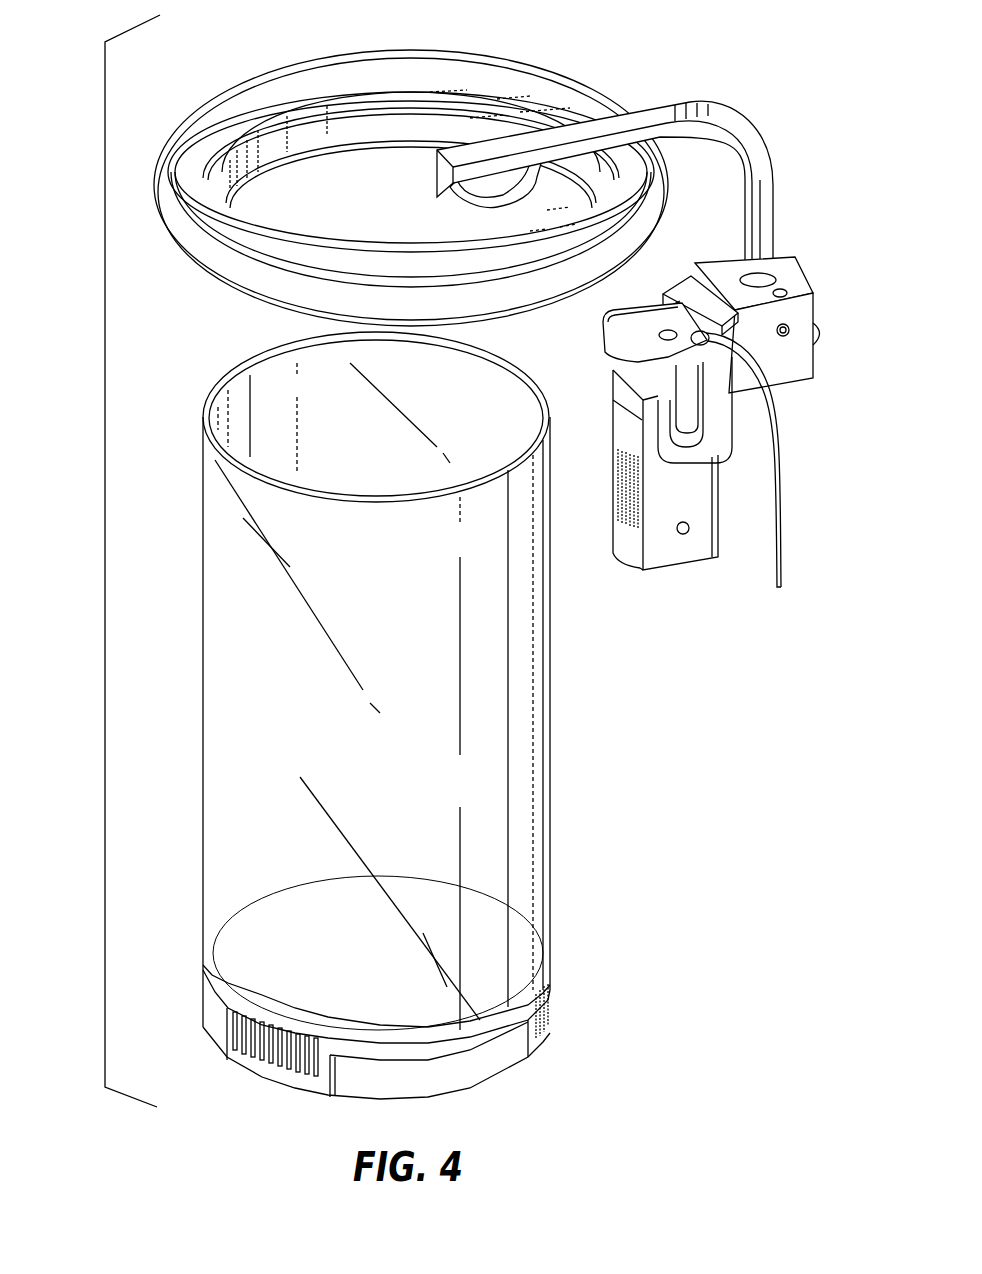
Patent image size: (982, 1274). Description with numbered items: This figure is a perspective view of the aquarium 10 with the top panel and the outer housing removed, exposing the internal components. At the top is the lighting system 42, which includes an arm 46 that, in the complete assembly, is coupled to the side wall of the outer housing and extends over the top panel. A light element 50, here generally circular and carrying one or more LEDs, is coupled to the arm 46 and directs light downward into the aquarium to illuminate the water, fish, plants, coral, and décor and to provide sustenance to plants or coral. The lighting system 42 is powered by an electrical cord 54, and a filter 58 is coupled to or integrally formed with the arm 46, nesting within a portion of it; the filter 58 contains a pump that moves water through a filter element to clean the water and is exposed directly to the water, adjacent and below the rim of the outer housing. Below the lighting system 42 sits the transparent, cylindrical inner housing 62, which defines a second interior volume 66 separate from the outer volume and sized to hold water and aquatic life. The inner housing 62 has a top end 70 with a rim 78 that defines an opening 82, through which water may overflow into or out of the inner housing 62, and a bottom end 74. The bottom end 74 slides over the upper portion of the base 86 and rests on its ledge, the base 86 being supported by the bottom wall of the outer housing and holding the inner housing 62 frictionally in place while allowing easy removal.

The aquarium 10 is at (73, 136).
The lighting system 42 is at (411, 164).
The arm 46 is at (713, 110).
The light element 50 is at (297, 90).
The electrical cord 54 is at (780, 517).
The filter 58 is at (690, 393).
The inner housing 62 is at (361, 703).
The second interior volume 66 is at (273, 433).
The top end 70 is at (233, 572).
The bottom end 74 is at (257, 948).
The rim 78 is at (210, 410).
The opening 82 is at (313, 365).
The base 86 is at (500, 1061).